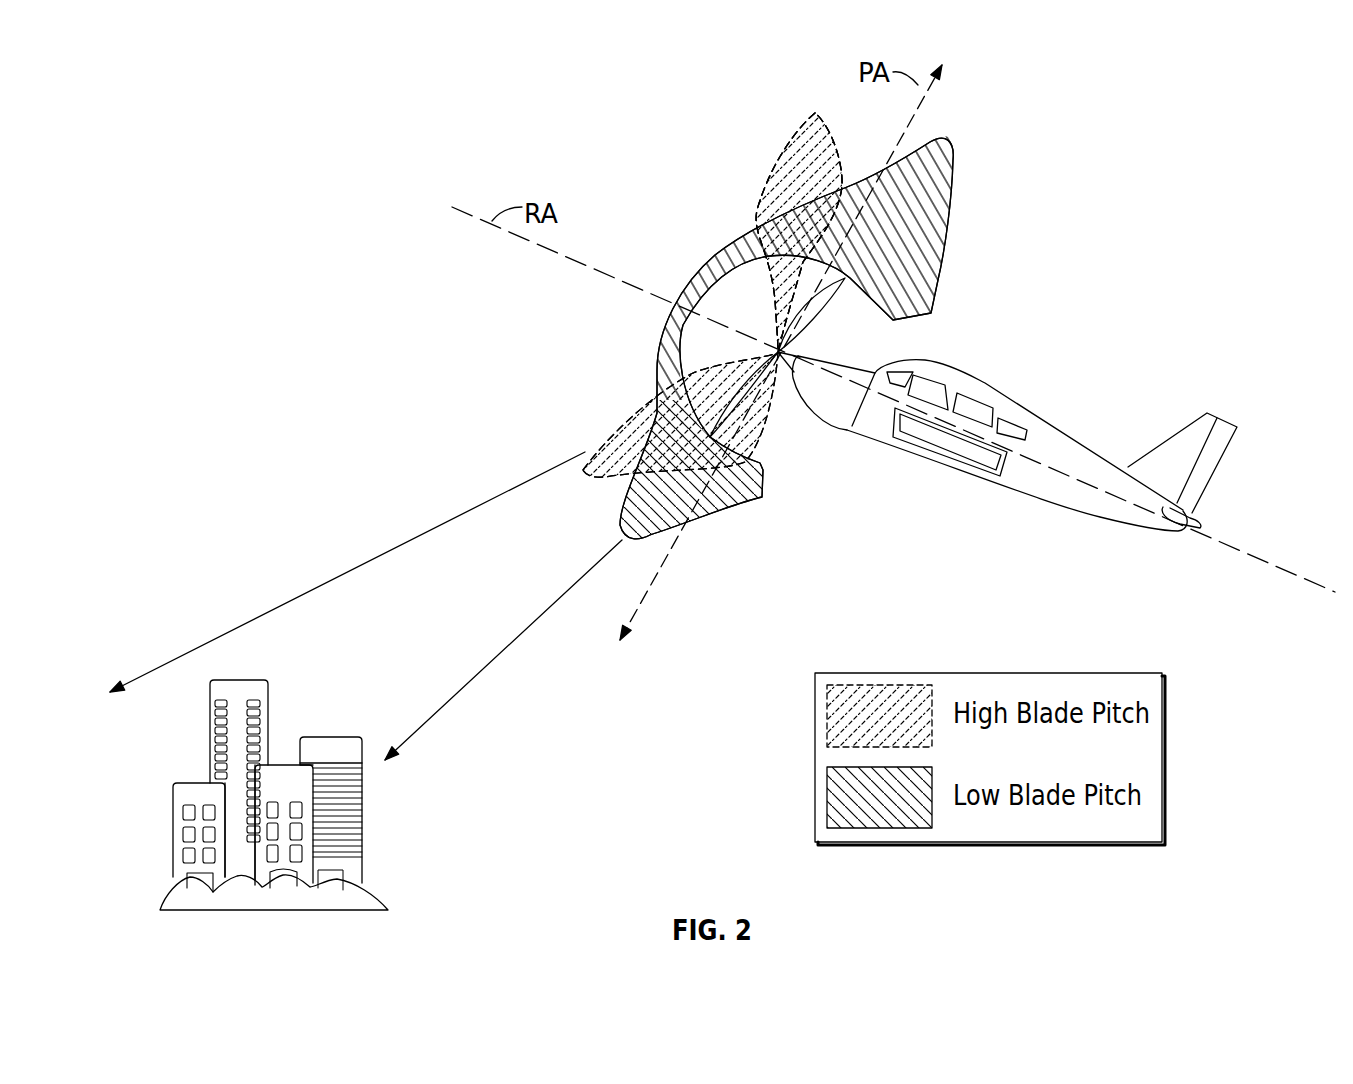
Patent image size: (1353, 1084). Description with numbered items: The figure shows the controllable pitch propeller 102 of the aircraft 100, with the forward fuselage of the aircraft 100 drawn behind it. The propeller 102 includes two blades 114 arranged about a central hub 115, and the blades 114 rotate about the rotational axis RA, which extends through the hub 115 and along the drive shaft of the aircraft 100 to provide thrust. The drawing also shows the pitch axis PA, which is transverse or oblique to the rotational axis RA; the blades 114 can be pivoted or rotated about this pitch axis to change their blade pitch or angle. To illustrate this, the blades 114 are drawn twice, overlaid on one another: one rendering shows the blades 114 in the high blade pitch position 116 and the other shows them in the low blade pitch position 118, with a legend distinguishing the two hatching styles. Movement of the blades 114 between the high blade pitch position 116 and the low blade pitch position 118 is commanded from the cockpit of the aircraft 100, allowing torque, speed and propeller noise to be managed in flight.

The aircraft 100 is at (1057, 410).
The propeller 102 is at (795, 118).
The blades 114 is at (818, 114).
The hub 115 is at (766, 300).
The high blade pitch position 116 is at (752, 190).
The low blade pitch position 118 is at (938, 232).